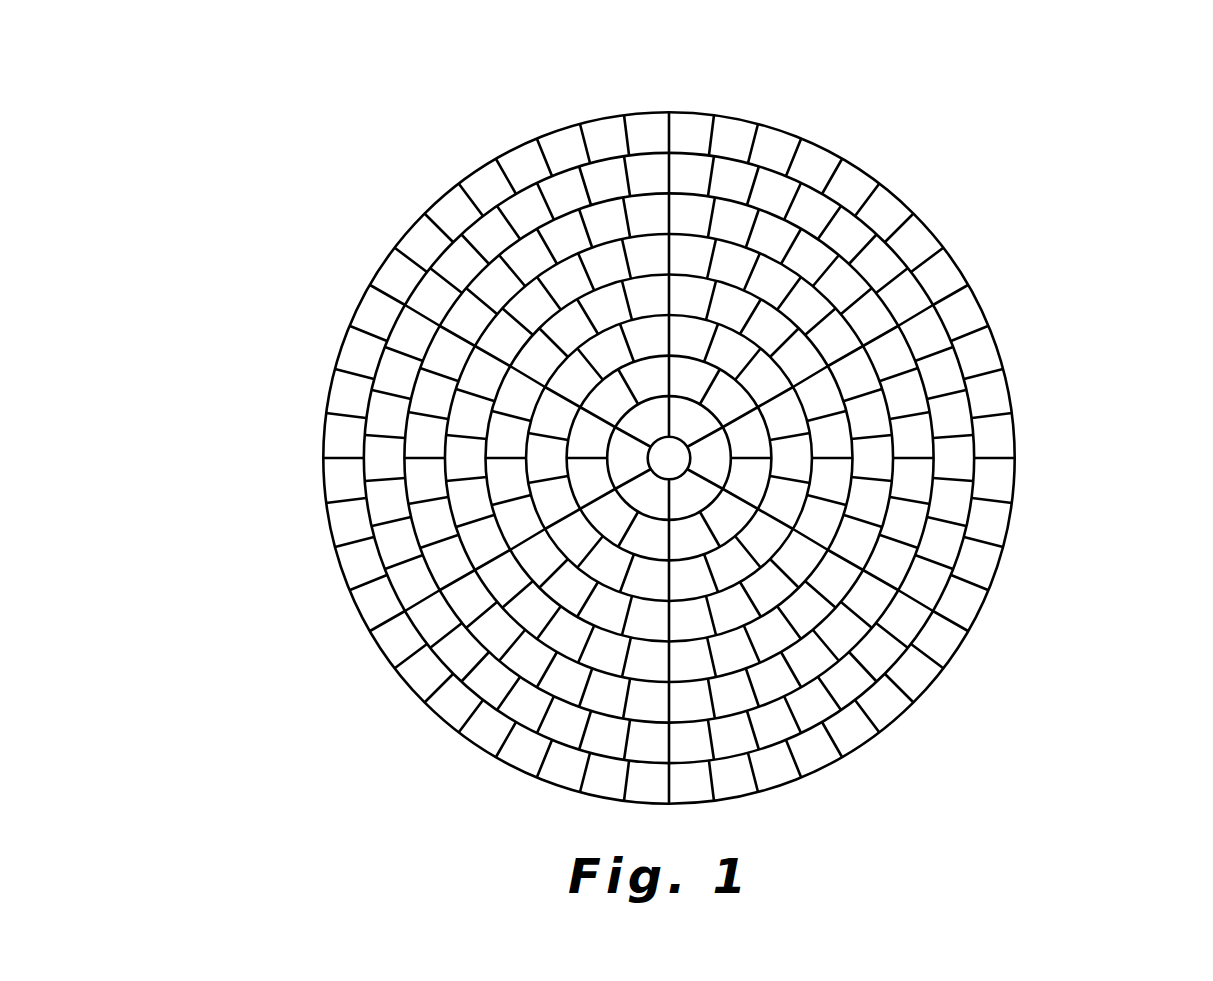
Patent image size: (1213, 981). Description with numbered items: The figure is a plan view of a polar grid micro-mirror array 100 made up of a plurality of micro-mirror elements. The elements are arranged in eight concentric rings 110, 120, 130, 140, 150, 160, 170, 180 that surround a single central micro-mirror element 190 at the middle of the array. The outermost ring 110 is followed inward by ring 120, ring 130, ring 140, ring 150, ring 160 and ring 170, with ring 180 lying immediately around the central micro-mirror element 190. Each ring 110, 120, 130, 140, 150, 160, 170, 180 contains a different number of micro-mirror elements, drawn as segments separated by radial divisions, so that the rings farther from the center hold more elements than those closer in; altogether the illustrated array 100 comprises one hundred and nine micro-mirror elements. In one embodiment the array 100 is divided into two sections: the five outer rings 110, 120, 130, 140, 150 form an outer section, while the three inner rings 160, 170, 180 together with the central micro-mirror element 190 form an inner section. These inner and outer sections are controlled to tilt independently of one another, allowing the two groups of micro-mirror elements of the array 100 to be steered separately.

The polar grid micro-mirror array 100 is at (664, 446).
The concentric ring 110 is at (447, 192).
The concentric ring 120 is at (408, 321).
The concentric ring 130 is at (409, 428).
The concentric ring 140 is at (465, 513).
The concentric ring 150 is at (808, 565).
The concentric ring 160 is at (793, 503).
The concentric ring 170 is at (754, 472).
The concentric ring 180 is at (716, 443).
The central micro-mirror element 190 is at (682, 442).